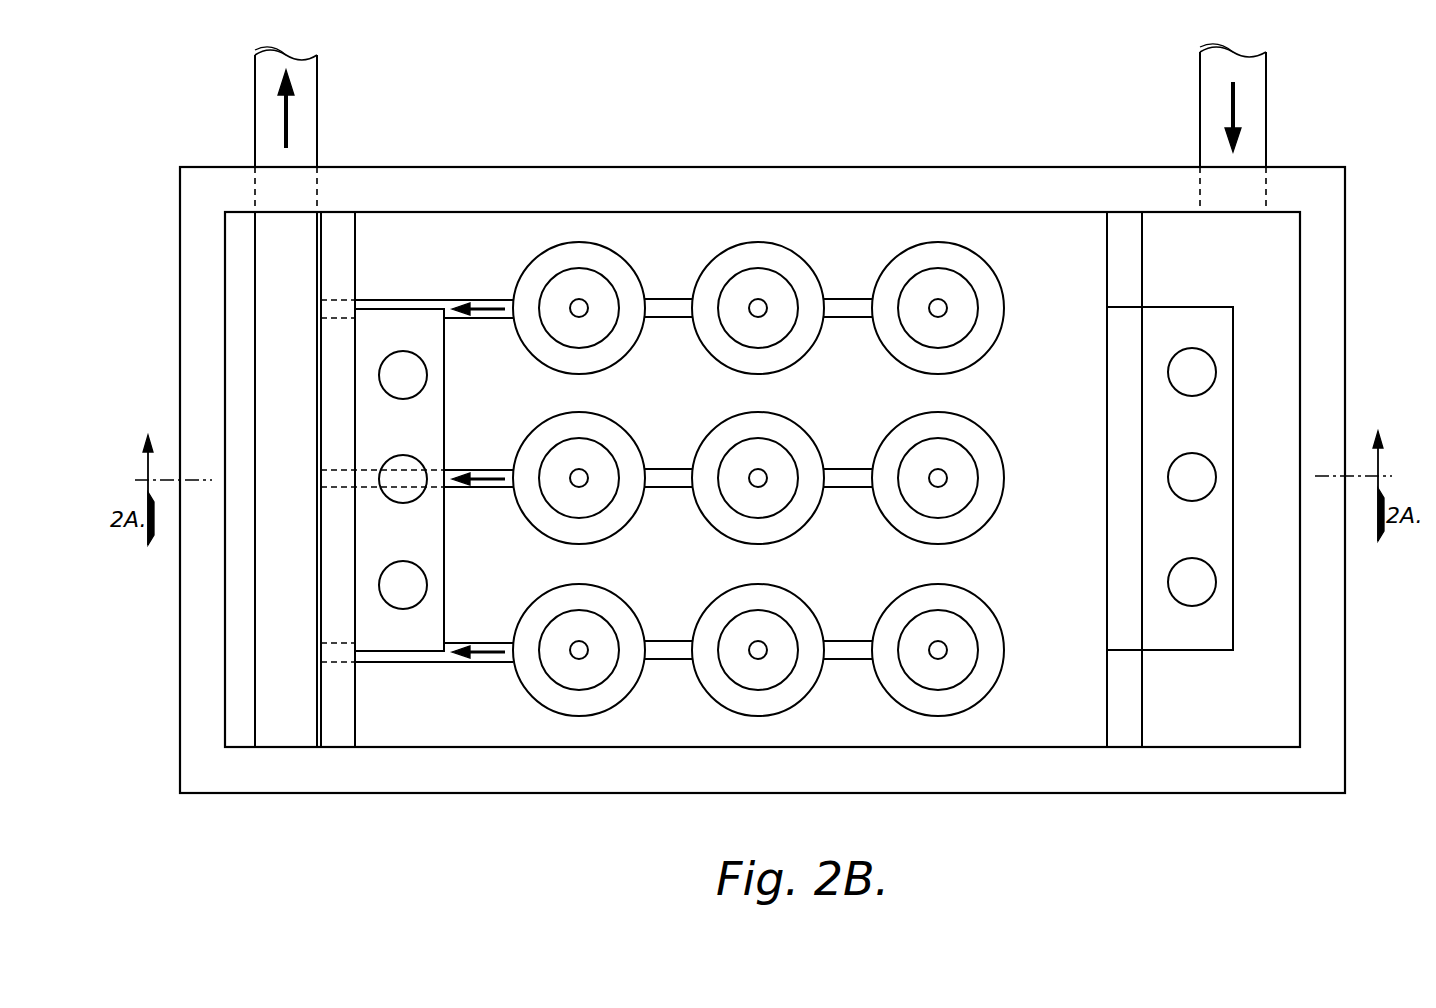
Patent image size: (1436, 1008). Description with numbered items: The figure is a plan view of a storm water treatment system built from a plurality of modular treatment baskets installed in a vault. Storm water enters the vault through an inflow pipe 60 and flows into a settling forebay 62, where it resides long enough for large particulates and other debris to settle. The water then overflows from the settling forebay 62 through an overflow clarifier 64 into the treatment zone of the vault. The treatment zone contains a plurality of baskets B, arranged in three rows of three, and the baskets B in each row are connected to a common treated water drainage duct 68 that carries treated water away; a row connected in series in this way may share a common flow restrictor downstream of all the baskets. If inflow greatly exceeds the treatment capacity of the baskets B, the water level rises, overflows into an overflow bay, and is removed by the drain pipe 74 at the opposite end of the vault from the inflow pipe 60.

The drain pipe 74 is at (317, 115).
The inflow pipe 60 is at (1266, 115).
The common treated water drainage duct 68 is at (478, 299).
The basket B is at (636, 269).
The overflow clarifier 64 is at (1195, 436).
The settling forebay 62 is at (1278, 433).